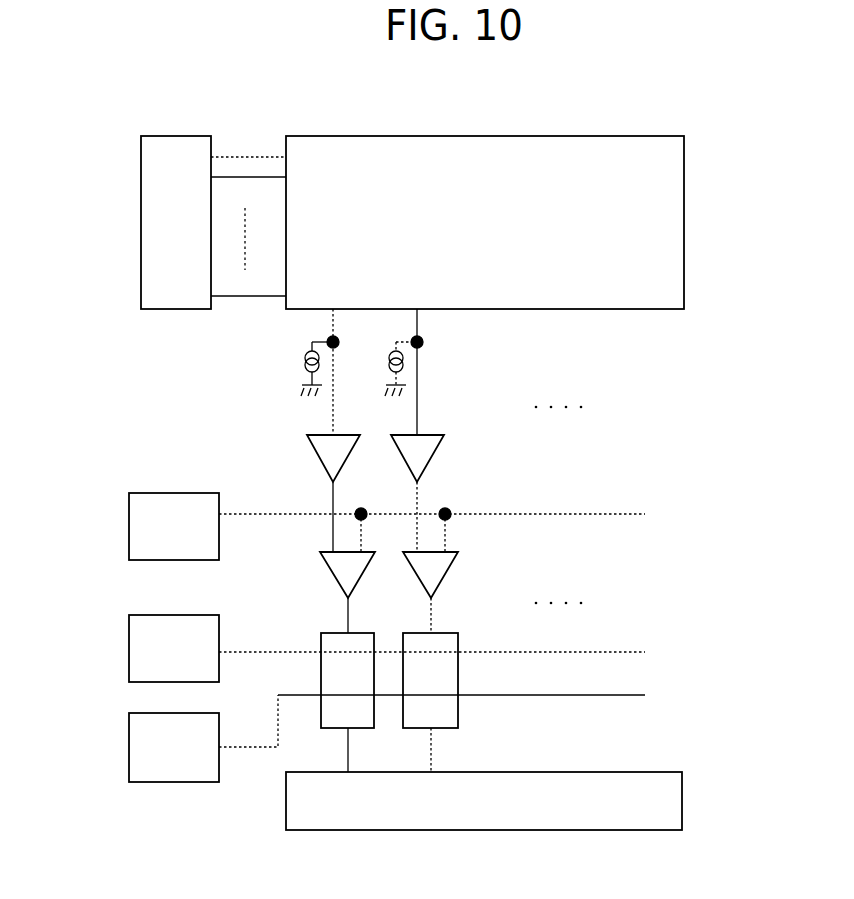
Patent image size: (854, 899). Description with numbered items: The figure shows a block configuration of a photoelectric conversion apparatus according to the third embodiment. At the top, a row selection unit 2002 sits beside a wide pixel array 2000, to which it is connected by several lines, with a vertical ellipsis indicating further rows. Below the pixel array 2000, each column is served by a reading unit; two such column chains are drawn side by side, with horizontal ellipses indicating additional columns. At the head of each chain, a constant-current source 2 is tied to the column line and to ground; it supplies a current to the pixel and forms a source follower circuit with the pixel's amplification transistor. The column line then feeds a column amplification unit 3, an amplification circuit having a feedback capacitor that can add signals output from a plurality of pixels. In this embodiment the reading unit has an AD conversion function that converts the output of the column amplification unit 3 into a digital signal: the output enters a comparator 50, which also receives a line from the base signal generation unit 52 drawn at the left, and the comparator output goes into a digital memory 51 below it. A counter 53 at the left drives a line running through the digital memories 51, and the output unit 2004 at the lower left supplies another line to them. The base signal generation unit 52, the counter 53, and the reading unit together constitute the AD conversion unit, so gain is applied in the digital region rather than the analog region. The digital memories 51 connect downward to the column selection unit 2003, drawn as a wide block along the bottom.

The row selection unit 2002 is at (141, 218).
The pixel array 2000 is at (684, 222).
The constant-current source 2 is at (305, 364).
The column amplification unit 3 is at (320, 463).
The base signal generation unit 52 is at (128, 528).
The comparator 50 is at (333, 579).
The counter 53 is at (128, 656).
The digital memory 51 is at (321, 642).
The output unit 2004 is at (128, 752).
The column selection unit 2003 is at (473, 830).